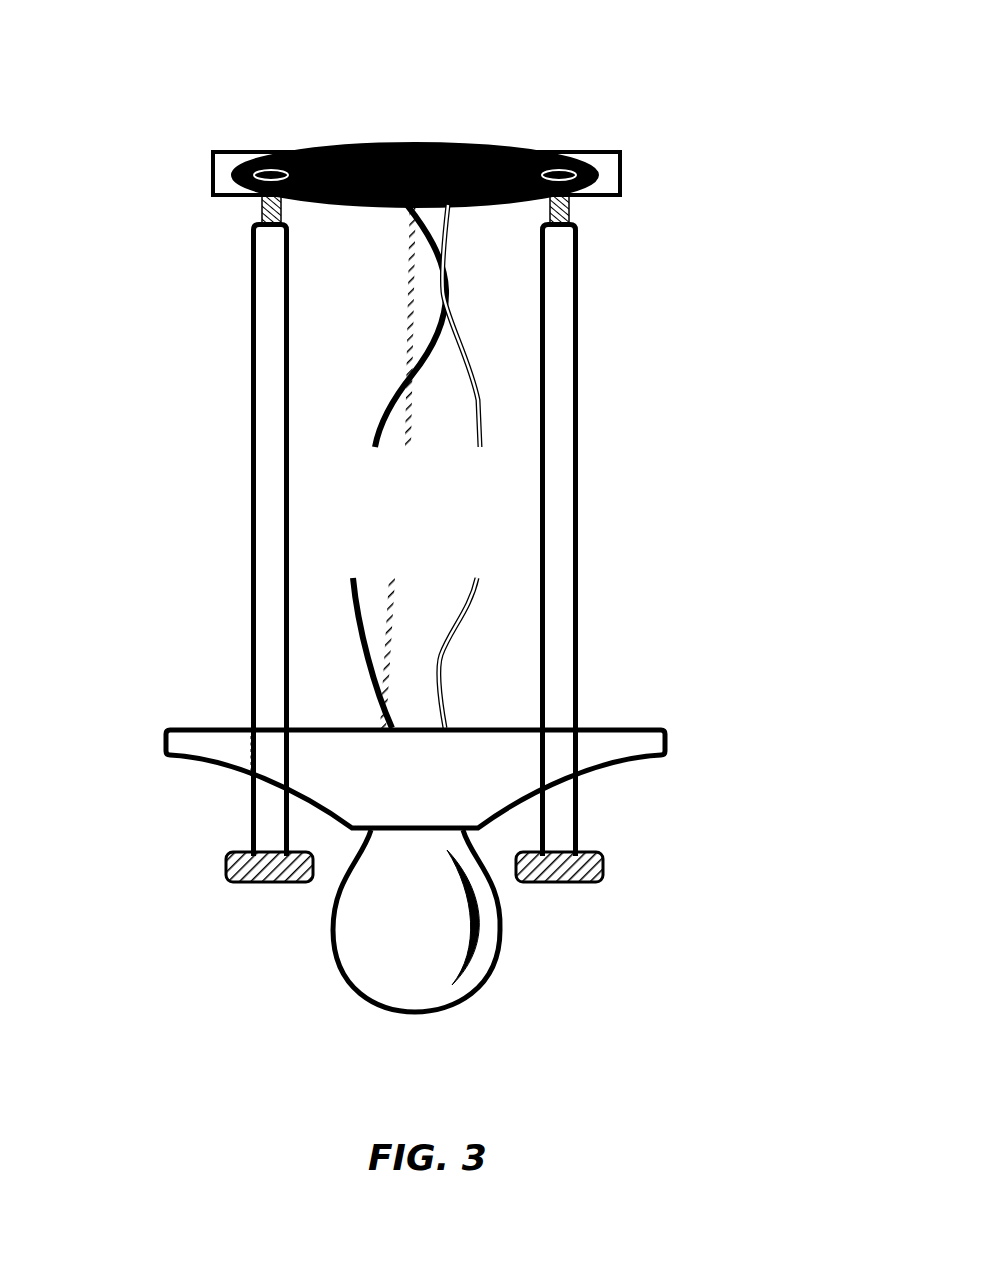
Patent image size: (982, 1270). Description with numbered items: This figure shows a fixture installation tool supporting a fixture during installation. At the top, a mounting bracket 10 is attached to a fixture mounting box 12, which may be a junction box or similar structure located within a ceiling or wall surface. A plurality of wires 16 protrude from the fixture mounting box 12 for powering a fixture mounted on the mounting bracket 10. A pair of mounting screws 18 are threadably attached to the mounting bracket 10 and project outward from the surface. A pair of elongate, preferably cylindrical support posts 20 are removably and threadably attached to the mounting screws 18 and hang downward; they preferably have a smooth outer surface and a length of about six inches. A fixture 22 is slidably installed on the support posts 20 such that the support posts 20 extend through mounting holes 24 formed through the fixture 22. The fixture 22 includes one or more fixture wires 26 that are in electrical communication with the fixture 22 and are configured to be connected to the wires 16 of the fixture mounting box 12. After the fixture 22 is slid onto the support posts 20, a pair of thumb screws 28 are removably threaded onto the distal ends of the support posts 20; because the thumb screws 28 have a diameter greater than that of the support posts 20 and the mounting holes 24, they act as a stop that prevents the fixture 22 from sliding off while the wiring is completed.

The mounting bracket 10 is at (424, 145).
The fixture mounting box 12 is at (608, 152).
The wires 16 is at (480, 428).
The mounting screws 18 is at (262, 213).
The support posts 20 is at (252, 552).
The fixture 22 is at (665, 750).
The mounting holes 24 is at (255, 752).
The fixture wires 26 is at (440, 688).
The thumb screws 28 is at (227, 866).